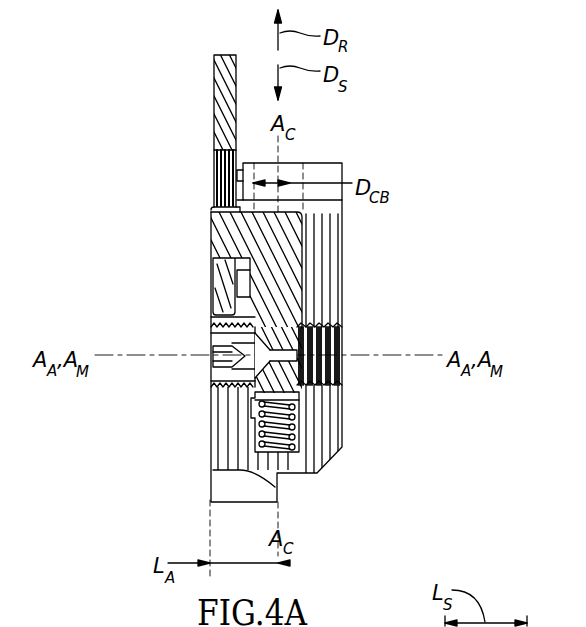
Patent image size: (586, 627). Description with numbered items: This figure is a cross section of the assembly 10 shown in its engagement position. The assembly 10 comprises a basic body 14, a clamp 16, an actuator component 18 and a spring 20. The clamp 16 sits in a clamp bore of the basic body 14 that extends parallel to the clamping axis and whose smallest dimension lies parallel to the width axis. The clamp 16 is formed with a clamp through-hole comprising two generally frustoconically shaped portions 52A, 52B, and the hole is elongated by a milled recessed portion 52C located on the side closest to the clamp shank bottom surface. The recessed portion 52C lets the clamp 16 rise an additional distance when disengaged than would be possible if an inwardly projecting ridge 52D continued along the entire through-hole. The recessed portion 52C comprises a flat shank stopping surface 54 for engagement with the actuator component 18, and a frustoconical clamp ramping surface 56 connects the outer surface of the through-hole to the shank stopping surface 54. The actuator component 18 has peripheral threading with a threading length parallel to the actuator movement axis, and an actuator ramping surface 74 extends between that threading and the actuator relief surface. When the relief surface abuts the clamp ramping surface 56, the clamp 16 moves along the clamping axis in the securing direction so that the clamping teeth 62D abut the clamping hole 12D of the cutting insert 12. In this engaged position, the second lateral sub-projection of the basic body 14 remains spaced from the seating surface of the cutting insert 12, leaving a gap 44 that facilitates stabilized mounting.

The assembly 10 is at (395, 67).
The cutting insert 12 is at (210, 94).
The clamping hole 12D is at (215, 270).
The basic body 14 is at (320, 151).
The clamp 16 is at (211, 233).
The actuator component 18 is at (200, 331).
The spring 20 is at (300, 427).
The gap 44 is at (212, 318).
The frustoconically shaped portion 52A is at (270, 346).
The frustoconically shaped portion 52B is at (283, 351).
The recessed portion 52C is at (336, 383).
The inwardly projecting ridge 52D is at (268, 349).
The shank stopping surface 54 is at (300, 398).
The clamp ramping surface 56 is at (213, 429).
The actuator ramping surface 74 is at (251, 398).
The clamping teeth 62D is at (213, 262).